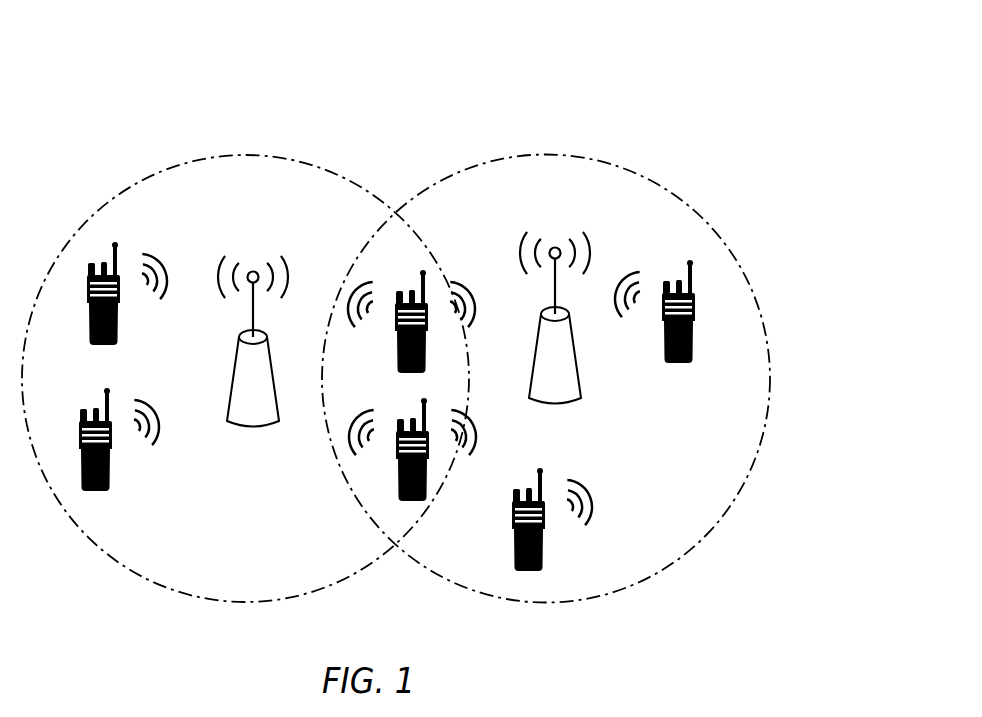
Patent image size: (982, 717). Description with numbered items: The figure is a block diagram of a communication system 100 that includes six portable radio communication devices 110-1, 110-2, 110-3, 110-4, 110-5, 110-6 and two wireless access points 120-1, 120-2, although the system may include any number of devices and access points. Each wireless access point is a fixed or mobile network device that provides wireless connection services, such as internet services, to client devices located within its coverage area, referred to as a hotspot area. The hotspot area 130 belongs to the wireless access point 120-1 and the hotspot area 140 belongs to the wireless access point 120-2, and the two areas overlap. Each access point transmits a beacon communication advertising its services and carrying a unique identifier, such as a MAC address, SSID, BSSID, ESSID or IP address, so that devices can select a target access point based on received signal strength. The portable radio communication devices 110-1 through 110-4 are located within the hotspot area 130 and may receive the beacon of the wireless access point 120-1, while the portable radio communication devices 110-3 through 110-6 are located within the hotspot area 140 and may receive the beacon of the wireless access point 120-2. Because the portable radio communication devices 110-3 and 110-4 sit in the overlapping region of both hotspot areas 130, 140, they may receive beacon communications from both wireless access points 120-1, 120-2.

The communication system 100 is at (690, 29).
The portable radio communication device 110-1 is at (121, 333).
The portable radio communication device 110-2 is at (112, 472).
The portable radio communication device 110-3 is at (400, 293).
The portable radio communication device 110-4 is at (396, 471).
The portable radio communication device 110-5 is at (545, 549).
The portable radio communication device 110-6 is at (693, 345).
The wireless access point 120-1 is at (253, 271).
The wireless access point 120-2 is at (555, 247).
The hotspot area 130 is at (227, 154).
The hotspot area 140 is at (545, 154).